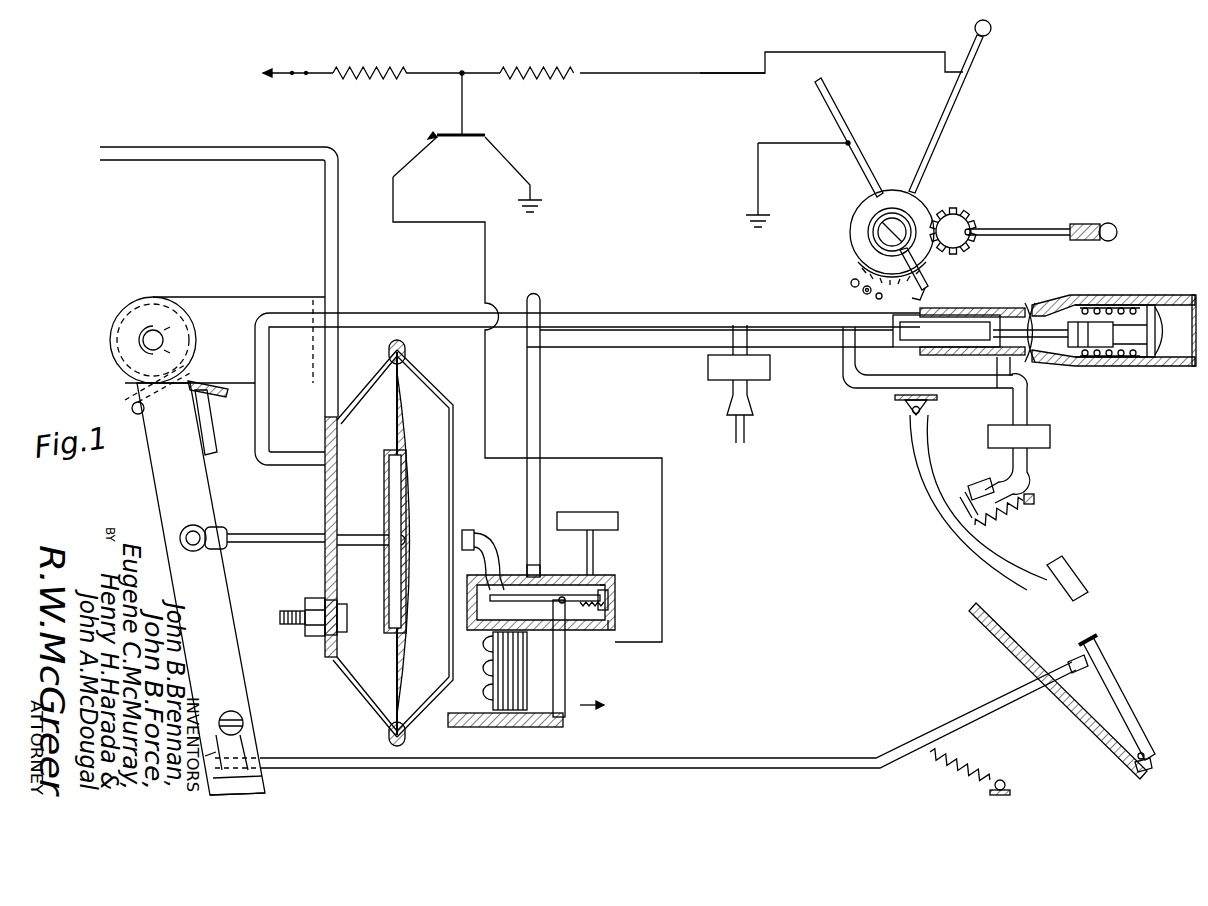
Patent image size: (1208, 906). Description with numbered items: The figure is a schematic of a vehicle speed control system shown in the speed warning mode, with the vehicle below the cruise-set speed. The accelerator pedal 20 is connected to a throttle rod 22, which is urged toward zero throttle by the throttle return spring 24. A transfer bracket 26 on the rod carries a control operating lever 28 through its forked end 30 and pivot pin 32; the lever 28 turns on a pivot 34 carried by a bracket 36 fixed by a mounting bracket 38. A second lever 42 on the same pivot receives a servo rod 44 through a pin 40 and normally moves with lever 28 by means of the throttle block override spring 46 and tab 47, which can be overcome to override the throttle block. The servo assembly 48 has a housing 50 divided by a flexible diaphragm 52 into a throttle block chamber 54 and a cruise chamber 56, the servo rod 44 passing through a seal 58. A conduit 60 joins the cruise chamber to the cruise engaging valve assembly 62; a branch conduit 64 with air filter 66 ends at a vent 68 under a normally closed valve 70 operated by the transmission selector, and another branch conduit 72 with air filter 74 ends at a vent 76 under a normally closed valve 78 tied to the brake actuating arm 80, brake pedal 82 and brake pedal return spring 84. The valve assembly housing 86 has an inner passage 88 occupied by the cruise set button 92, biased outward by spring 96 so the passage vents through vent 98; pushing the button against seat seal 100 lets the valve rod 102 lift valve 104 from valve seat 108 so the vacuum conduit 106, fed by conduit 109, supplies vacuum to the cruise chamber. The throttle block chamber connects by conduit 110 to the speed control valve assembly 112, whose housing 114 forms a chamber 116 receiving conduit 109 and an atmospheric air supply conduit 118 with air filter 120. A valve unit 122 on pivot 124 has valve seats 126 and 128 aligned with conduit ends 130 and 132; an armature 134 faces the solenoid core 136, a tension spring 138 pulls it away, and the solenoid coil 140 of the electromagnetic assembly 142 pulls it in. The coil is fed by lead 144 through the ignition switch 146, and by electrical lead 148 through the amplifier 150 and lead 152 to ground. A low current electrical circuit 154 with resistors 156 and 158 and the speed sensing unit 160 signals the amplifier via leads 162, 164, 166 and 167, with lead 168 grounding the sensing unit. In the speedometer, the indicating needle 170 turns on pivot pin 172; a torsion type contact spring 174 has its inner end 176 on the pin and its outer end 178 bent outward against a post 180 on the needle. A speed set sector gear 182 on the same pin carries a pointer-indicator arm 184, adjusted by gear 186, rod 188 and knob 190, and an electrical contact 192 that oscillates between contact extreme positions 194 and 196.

The accelerator pedal 20 is at (1108, 672).
The throttle rod 22 is at (1015, 698).
The throttle return spring 24 is at (962, 758).
The transfer bracket 26 is at (258, 784).
The control operating lever 28 is at (235, 636).
The forked end 30 is at (255, 714).
The pivot pin 32 is at (243, 742).
The pivot 34 is at (147, 340).
The bracket 36 is at (232, 300).
The mounting bracket 38 is at (324, 237).
The pin 40 is at (180, 538).
The lever 42 is at (165, 474).
The servo rod 44 is at (265, 536).
The throttle block override spring 46 is at (218, 400).
The tab 47 is at (210, 442).
The servo assembly 48 is at (420, 375).
The housing 50 is at (385, 720).
The flexible diaphragm 52 is at (406, 416).
The throttle block chamber 54 is at (445, 480).
The cruise chamber 56 is at (372, 390).
The seal 58 is at (325, 522).
The conduit 60 is at (280, 466).
The cruise engaging valve assembly 62 is at (1090, 297).
The branch conduit 64 is at (746, 386).
The air filter 66 is at (708, 372).
The vent 68 is at (740, 405).
The normally closed valve 70 is at (752, 425).
The branch conduit 72 is at (845, 386).
The air filter 74 is at (1050, 436).
The vent 76 is at (978, 485).
The normally closed valve 78 is at (968, 492).
The brake actuating arm 80 is at (975, 552).
The brake pedal 82 is at (1086, 594).
The brake pedal return spring 84 is at (1000, 516).
The housing 86 is at (1022, 326).
The inner passage 88 is at (1070, 322).
The cruise set button 92 is at (1160, 366).
The spring 96 is at (1090, 366).
The vent 98 is at (1138, 298).
The seat seal 100 is at (1128, 366).
The valve rod 102 is at (1060, 356).
The valve 104 is at (975, 355).
The vacuum conduit 106 is at (600, 347).
The valve seat 108 is at (1000, 384).
The conduit 109 is at (538, 395).
The conduit 110 is at (486, 541).
The speed control valve assembly 112 is at (620, 590).
The housing 114 is at (612, 615).
The chamber 116 is at (610, 642).
The atmospheric air supply conduit 118 is at (600, 576).
The air filter 120 is at (595, 520).
The valve unit 122 is at (545, 575).
The pivot 124 is at (562, 596).
The valve seat 126 is at (525, 590).
The valve seat 128 is at (608, 600).
The conduit end 130 is at (525, 660).
The conduit end 132 is at (620, 580).
The armature 134 is at (490, 600).
The solenoid core 136 is at (493, 642).
The tension spring 138 is at (565, 652).
The solenoid coil 140 is at (490, 666).
The electromagnetic assembly 142 is at (480, 700).
The lead 144 is at (568, 727).
The ignition switch 146 is at (298, 76).
The electrical lead 148 is at (485, 257).
The amplifier 150 is at (453, 143).
The lead 152 is at (535, 186).
The electrical circuit 154 is at (650, 72).
The resistor 156 is at (382, 80).
The resistor 158 is at (552, 80).
The speed sensing unit 160 is at (900, 186).
The lead 162 is at (715, 74).
The lead 164 is at (462, 105).
The lead 166 is at (462, 72).
The lead 167 is at (310, 73).
The lead 168 is at (758, 170).
The speedometer indicating needle 170 is at (830, 108).
The pivot pin 172 is at (880, 228).
The torsion type contact spring 174 is at (878, 240).
The inner end 176 is at (920, 232).
The outer end 178 is at (930, 290).
The post 180 is at (905, 302).
The speed set sector gear 182 is at (935, 258).
The pointer-indicator arm 184 is at (940, 128).
The gear 186 is at (975, 229).
The rod 188 is at (1030, 229).
The knob 190 is at (1092, 224).
The electrical contact 192 is at (864, 291).
The contact extreme position 194 is at (852, 283).
The contact extreme position 196 is at (879, 297).